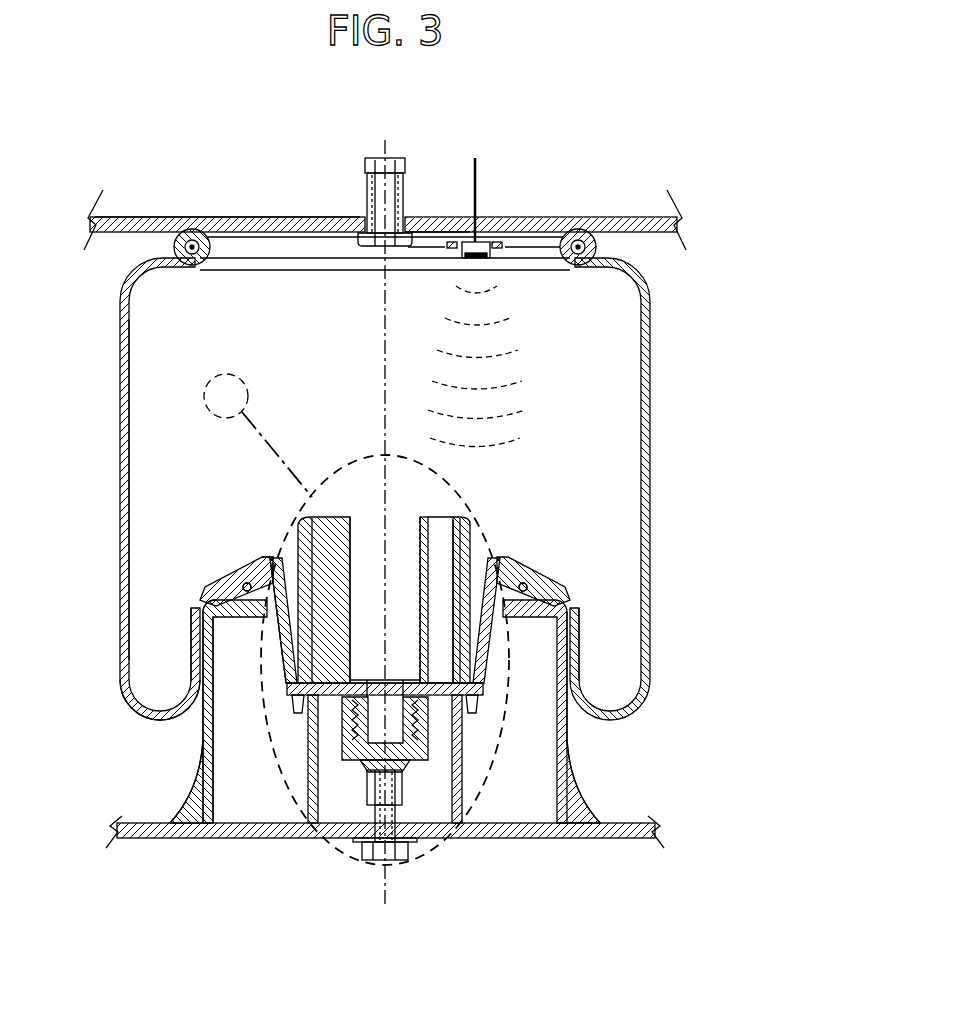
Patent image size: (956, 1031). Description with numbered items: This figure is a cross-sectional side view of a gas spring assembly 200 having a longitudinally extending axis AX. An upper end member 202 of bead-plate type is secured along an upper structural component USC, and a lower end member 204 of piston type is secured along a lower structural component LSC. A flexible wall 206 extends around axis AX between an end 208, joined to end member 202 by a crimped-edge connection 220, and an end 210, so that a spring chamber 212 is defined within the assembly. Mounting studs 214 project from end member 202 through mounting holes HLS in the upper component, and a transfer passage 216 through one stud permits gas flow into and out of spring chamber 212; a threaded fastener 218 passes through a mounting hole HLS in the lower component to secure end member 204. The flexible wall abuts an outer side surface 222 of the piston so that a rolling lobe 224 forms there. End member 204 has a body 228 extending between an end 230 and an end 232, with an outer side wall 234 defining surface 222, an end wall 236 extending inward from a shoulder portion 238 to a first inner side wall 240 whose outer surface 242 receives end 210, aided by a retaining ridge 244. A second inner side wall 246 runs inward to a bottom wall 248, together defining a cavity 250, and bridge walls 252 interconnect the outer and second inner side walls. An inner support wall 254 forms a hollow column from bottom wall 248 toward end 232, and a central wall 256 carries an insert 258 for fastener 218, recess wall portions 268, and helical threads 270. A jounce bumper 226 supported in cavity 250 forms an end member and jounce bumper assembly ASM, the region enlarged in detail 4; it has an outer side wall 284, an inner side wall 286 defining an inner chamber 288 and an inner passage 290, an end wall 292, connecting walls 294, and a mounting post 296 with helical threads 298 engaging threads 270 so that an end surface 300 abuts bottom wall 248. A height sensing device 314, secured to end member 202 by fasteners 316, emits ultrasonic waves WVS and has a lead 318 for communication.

The gas spring assembly 200 is at (562, 164).
The end member 202 is at (247, 221).
The end member 204 is at (601, 783).
The flexible wall 206 is at (651, 434).
The end 208 is at (220, 283).
The end 210 is at (216, 572).
The spring chamber 212 is at (156, 330).
The mounting studs 214 is at (404, 170).
The transfer passage 216 is at (372, 152).
The threaded fastener 218 is at (365, 852).
The crimped-edge connection 220 is at (175, 247).
The outer side surface 222 is at (200, 735).
The rolling lobe 224 is at (160, 720).
The jounce bumper 226 is at (200, 640).
The body 228 is at (578, 745).
The end 230 is at (187, 627).
The end 232 is at (157, 801).
The outer side wall 234 is at (203, 758).
The end wall 236 is at (243, 580).
The shoulder portion 238 is at (204, 608).
The first inner side wall 240 is at (240, 572).
The outer surface 242 is at (527, 584).
The retaining ridge 244 is at (500, 571).
The second inner side wall 246 is at (503, 648).
The bottom wall 248 is at (573, 692).
The cavity 250 is at (286, 565).
The bridge walls 252 is at (235, 712).
The inner support wall 254 is at (308, 782).
The central wall 256 is at (360, 763).
The insert 258 is at (400, 795).
The recess wall portions 268 is at (430, 718).
The helical threads 270 is at (340, 715).
The outer side wall 284 is at (473, 628).
The inner side wall 286 is at (418, 556).
The inner chamber 288 is at (443, 551).
The inner passage 290 is at (372, 517).
The end wall 292 is at (445, 525).
The connecting walls 294 is at (312, 519).
The mounting post 296 is at (402, 680).
The helical threads 298 is at (430, 715).
The end surface 300 is at (308, 700).
The height sensing device 314 is at (492, 251).
The fasteners 316 is at (447, 250).
The lead or connection 318 is at (478, 178).
The detail view boundary 4 is at (356, 619).
The upper structural component USC is at (128, 218).
The lower structural component LSC is at (150, 840).
The mounting holes HLS is at (360, 220).
The axis AX is at (380, 360).
The ultrasonic waves WVS is at (508, 355).
The end member and jounce bumper assembly ASM is at (498, 544).